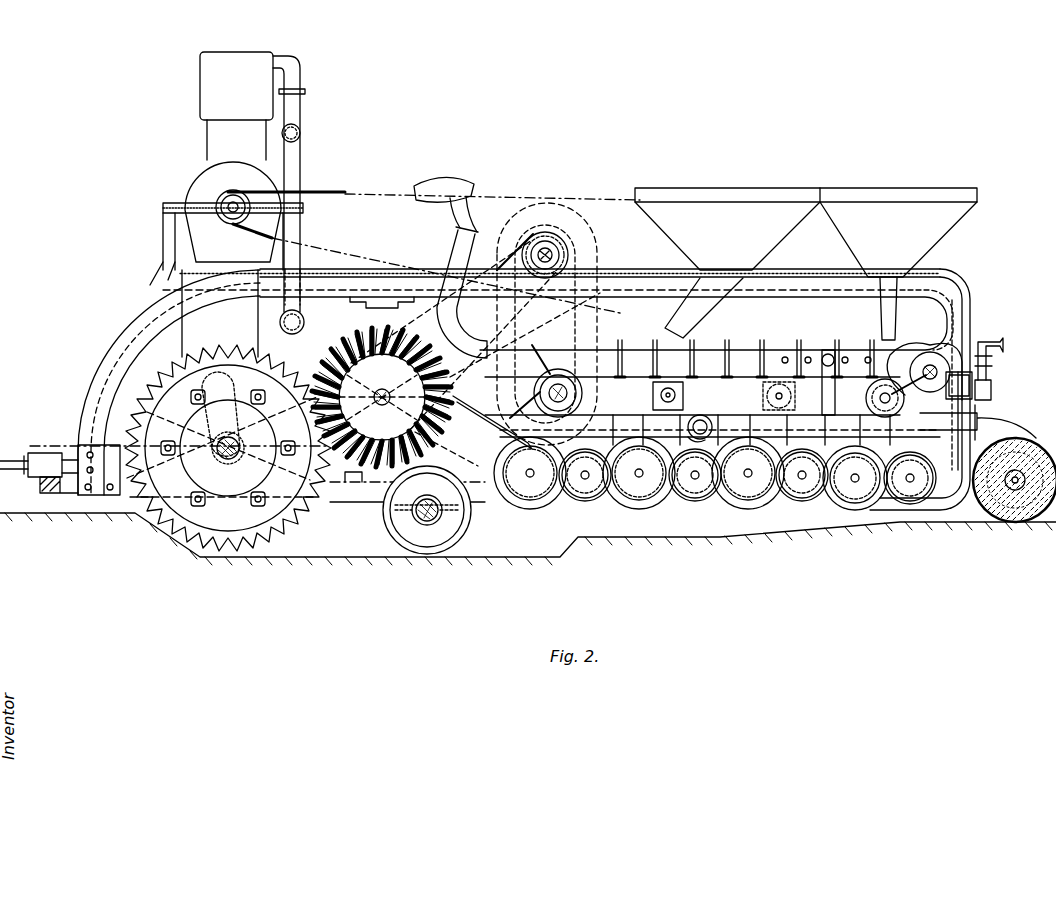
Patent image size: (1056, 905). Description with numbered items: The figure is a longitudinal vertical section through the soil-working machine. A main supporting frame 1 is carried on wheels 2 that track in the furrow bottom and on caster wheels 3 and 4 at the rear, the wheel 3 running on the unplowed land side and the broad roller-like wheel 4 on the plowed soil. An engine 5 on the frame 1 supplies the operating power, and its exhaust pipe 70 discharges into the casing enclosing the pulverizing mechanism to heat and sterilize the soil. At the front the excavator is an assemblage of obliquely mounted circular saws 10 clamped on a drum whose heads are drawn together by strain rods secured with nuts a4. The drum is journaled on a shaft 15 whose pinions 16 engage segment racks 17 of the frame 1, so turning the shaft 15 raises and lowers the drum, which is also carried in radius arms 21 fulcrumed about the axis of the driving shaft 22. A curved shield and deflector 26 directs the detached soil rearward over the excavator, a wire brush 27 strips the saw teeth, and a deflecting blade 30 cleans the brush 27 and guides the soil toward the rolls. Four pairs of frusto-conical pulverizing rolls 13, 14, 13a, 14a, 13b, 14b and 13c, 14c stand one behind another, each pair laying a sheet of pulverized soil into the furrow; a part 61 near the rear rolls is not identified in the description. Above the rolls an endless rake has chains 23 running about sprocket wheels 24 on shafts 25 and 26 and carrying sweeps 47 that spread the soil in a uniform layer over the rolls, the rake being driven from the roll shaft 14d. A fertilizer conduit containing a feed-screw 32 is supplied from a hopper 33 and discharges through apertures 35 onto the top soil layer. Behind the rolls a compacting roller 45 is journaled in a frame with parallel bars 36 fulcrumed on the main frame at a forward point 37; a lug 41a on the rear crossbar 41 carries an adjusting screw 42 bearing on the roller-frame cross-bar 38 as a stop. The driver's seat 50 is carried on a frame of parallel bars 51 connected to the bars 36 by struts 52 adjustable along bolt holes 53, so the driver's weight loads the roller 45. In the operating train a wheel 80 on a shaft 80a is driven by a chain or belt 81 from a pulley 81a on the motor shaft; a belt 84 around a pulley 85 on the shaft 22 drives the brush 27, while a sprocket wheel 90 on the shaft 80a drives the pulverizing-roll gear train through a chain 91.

The main supporting frame 1 is at (643, 276).
The wheels 2 is at (430, 557).
The caster wheel 3 is at (60, 452).
The caster wheel 4 is at (382, 612).
The engine 5 is at (236, 106).
The circular saws 10 is at (298, 514).
The pulverizing roll 13 is at (535, 497).
The pulverizing roll 13a is at (640, 498).
The pulverizing roll 13b is at (748, 498).
The ground wheel 13c is at (855, 478).
The pulverizing roll 14 is at (585, 497).
The pulverizing roll 14a is at (695, 498).
The pulverizing roll 14b is at (802, 498).
The small wheel 14c is at (913, 500).
The shaft 14d is at (568, 490).
The shaft 15 is at (220, 450).
The pinions 16 is at (221, 414).
The segment racks 17 is at (195, 436).
The radius arms 21 is at (238, 460).
The shaft 22 is at (385, 389).
The chains 23 is at (737, 360).
The sprocket wheels 24 is at (530, 390).
The shaft 25 is at (583, 393).
The shield and deflector 26 is at (112, 350).
The wire brush 27 is at (395, 480).
The deflecting blade and cleaner 30 is at (490, 420).
The feed-screw 32 is at (870, 400).
The hopper 33 is at (934, 238).
The apertures 35 is at (880, 441).
The parallel bars 36 is at (915, 430).
The forward point 37 is at (708, 425).
The cross-bar 38 is at (990, 416).
The rear crossbar 41 is at (968, 370).
The lug 41a is at (992, 392).
The adjusting screw 42 is at (994, 372).
The compacting roller 45 is at (1018, 522).
The sweeps 47 is at (620, 345).
The driver's seat 50 is at (447, 183).
The parallel bars 51 is at (456, 243).
The struts 52 is at (806, 400).
The bolt holes 53 is at (808, 356).
The arm 61 is at (895, 412).
The exhaust pipe 70 is at (302, 163).
The wheel 80 is at (572, 212).
The shaft 80a is at (568, 256).
The chain or belt 81 is at (336, 190).
The pulley or sprocket wheel 81a is at (238, 198).
The belt or chain 84 is at (510, 256).
The pulley 85 is at (446, 452).
The sprocket wheel 90 is at (548, 238).
The chain 91 is at (575, 335).
The nuts a4 is at (228, 456).